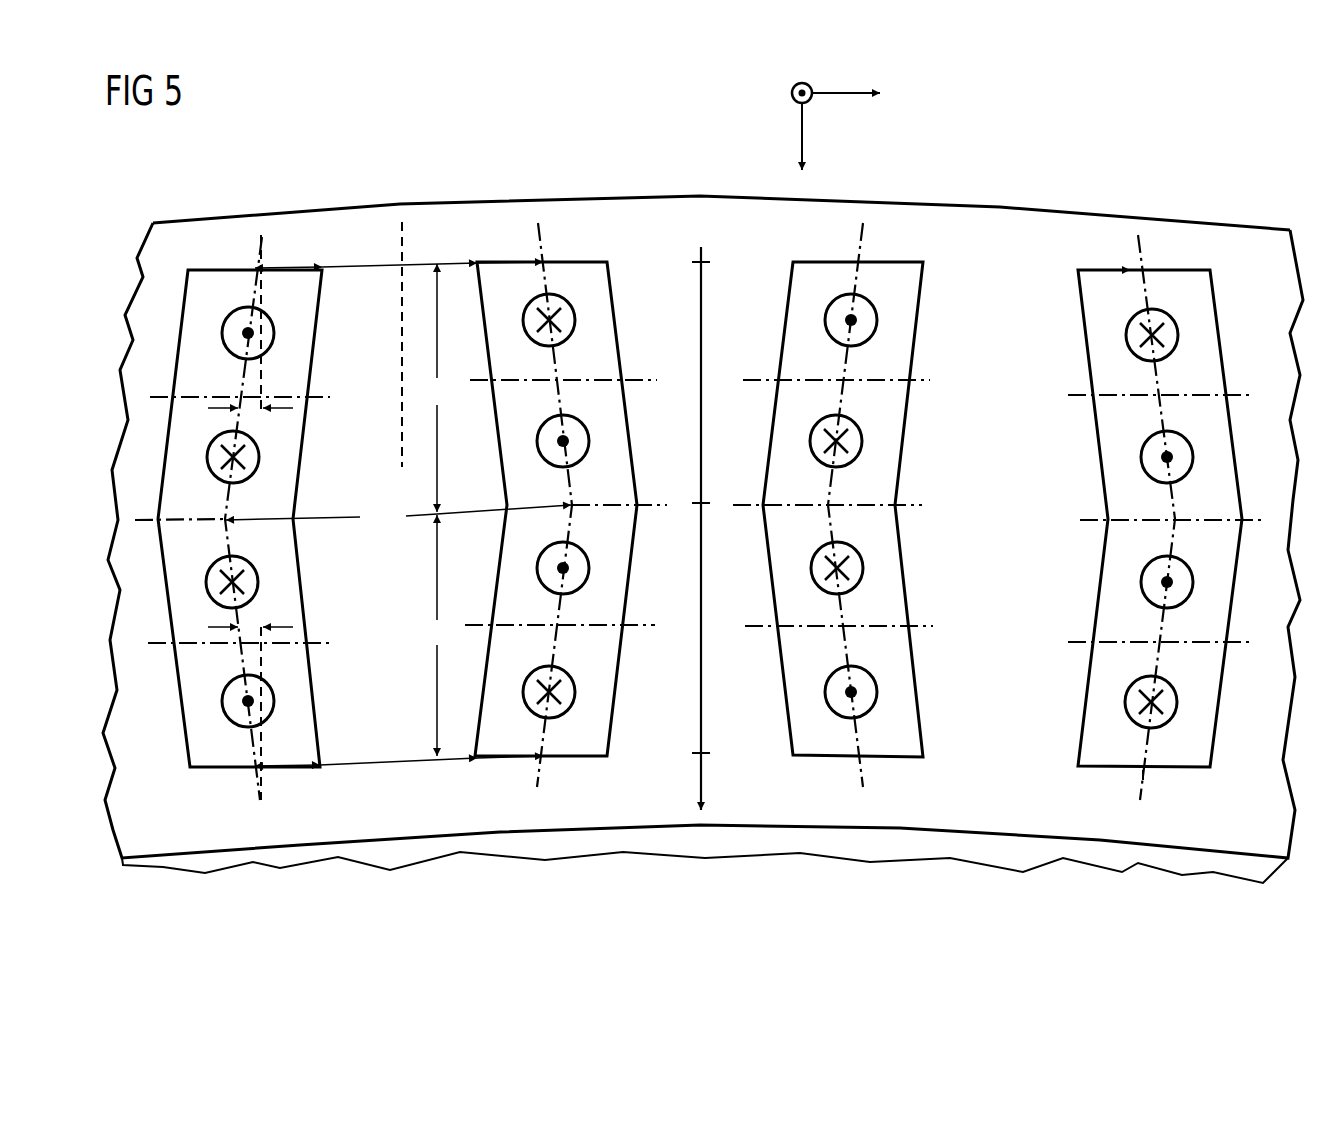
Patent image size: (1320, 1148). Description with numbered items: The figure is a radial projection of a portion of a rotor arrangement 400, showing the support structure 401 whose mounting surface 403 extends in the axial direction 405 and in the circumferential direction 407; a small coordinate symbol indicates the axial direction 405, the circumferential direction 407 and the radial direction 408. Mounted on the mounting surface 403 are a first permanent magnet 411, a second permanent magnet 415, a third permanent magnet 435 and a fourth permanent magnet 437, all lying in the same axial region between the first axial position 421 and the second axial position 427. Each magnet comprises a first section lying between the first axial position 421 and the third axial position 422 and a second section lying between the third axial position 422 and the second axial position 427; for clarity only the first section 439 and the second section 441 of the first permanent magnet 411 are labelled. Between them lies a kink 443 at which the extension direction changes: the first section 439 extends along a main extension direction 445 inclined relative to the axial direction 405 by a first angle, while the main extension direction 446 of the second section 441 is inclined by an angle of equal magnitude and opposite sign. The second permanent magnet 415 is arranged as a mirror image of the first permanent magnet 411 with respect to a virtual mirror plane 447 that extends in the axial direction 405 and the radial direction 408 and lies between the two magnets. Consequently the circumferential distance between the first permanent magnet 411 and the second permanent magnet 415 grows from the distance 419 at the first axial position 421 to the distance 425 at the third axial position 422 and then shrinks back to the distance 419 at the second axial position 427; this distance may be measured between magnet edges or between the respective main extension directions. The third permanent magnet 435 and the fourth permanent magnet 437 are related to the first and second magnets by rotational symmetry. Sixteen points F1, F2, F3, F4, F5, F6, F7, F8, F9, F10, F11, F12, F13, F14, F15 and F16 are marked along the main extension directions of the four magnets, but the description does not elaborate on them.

The rotor arrangement 400 is at (401, 176).
The support structure 401 is at (1027, 220).
The mounting surface 403 is at (948, 208).
The axial direction 405 is at (800, 137).
The circumferential direction 407 is at (842, 96).
The radial direction 408 is at (791, 94).
The first permanent magnet 411 is at (298, 348).
The second permanent magnet 415 is at (608, 356).
The third permanent magnet 435 is at (908, 290).
The fourth permanent magnet 437 is at (1096, 340).
The circumferential distance 419 is at (395, 265).
The first axial position 421 is at (703, 264).
The third axial position 422 is at (703, 503).
The second axial position 427 is at (703, 753).
The circumferential distance 425 is at (398, 517).
The first section 439 is at (439, 388).
The second section 441 is at (439, 635).
The kink 443 is at (307, 510).
The main extension direction 445 is at (256, 279).
The main extension direction 446 is at (255, 765).
The mirror plane 447 is at (404, 246).
The fastening point 1 F1 is at (246, 334).
The fastening point 2 F2 is at (551, 320).
The fastening point 3 F3 is at (853, 320).
The fastening point 4 F4 is at (1154, 335).
The fastening point 5 F5 is at (232, 457).
The fastening point 6 F6 is at (565, 441).
The fastening point 7 F7 is at (838, 441).
The fastening point 8 F8 is at (1169, 457).
The fastening point 9 F9 is at (231, 582).
The fastening point 10 F10 is at (247, 701).
The fastening point 11 F11 is at (565, 568).
The fastening point 12 F12 is at (551, 692).
The fastening point 13 F13 is at (839, 568).
The fastening point 14 F14 is at (853, 692).
The fastening point 15 F15 is at (1169, 582).
The fastening point 16 F16 is at (1153, 702).